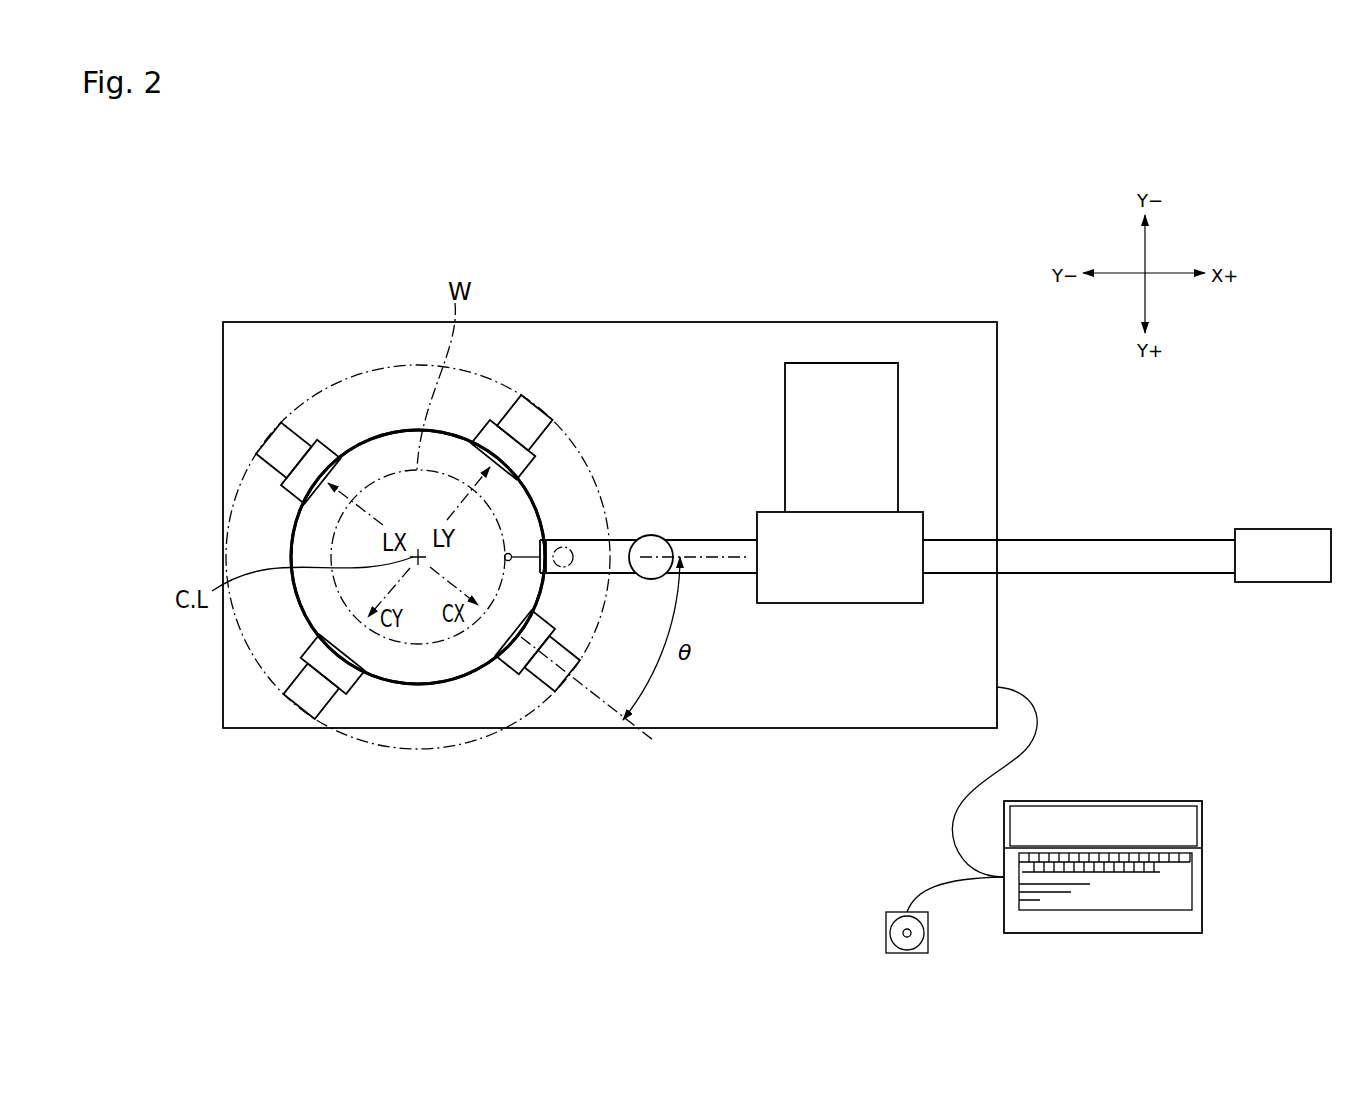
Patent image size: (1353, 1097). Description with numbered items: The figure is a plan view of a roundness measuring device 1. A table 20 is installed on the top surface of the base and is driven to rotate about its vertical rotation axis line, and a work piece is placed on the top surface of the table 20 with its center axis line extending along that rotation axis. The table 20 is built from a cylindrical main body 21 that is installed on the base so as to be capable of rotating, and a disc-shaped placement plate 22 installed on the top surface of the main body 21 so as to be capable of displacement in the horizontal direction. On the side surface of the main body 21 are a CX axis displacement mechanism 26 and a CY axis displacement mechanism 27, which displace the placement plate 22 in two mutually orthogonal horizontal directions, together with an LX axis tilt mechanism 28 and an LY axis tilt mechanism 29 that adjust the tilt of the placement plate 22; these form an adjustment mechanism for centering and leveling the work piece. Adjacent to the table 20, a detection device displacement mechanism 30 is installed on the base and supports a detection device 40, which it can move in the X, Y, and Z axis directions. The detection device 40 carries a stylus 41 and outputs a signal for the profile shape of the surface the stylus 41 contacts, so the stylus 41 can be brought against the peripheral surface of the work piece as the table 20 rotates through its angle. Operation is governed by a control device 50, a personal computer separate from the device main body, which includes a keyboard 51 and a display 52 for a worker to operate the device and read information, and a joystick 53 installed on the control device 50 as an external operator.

The roundness measuring device 1 is at (648, 218).
The table 20 is at (345, 420).
The main body 21 is at (400, 688).
The placement plate 22 is at (445, 662).
The CX axis displacement mechanism 26 is at (533, 683).
The CY axis displacement mechanism 27 is at (332, 705).
The LX axis tilt mechanism 28 is at (285, 467).
The LY axis tilt mechanism 29 is at (523, 424).
The detection device displacement mechanism 30 is at (823, 350).
The detection device 40 is at (563, 545).
The stylus 41 is at (522, 553).
The control device 50 is at (1057, 820).
The keyboard 51 is at (1177, 872).
The display 52 is at (1188, 823).
The joystick 53 is at (886, 930).